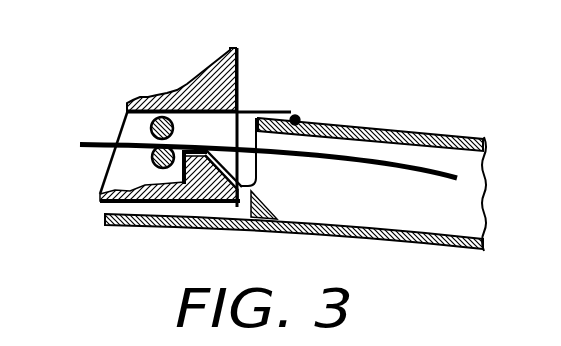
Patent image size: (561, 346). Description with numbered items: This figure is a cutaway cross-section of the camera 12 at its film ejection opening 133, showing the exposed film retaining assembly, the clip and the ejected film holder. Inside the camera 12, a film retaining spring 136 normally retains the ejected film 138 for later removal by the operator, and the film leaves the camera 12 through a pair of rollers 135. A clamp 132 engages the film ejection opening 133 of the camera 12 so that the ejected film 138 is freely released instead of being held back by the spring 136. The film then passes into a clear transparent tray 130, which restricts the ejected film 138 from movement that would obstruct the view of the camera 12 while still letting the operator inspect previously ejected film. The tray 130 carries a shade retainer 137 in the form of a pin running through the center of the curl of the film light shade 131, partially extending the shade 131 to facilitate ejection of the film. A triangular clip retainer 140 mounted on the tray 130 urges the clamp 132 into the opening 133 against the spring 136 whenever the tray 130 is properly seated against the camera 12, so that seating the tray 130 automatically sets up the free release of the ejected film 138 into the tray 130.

The camera 12 is at (186, 85).
The tray 130 is at (389, 232).
The film light shade 131 is at (281, 112).
The clamp 132 is at (256, 184).
The film ejection opening 133 is at (240, 150).
The rollers 135 is at (151, 128).
The film retaining spring 136 is at (160, 152).
The shade retainer 137 is at (301, 117).
The ejected film 138 is at (412, 171).
The triangular clip retainer 140 is at (274, 203).